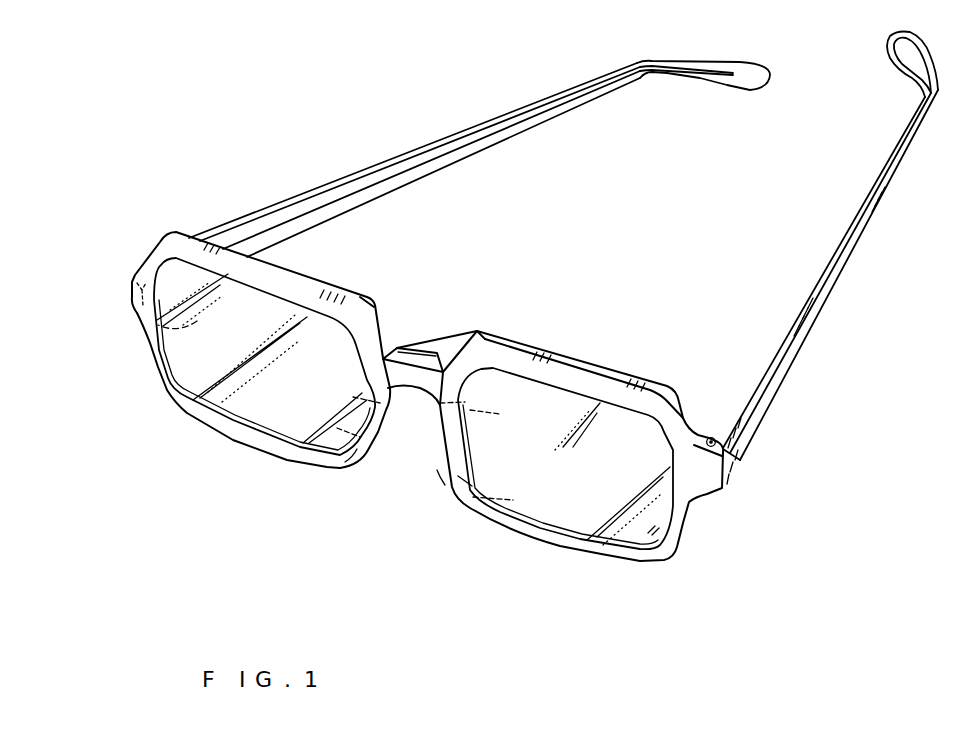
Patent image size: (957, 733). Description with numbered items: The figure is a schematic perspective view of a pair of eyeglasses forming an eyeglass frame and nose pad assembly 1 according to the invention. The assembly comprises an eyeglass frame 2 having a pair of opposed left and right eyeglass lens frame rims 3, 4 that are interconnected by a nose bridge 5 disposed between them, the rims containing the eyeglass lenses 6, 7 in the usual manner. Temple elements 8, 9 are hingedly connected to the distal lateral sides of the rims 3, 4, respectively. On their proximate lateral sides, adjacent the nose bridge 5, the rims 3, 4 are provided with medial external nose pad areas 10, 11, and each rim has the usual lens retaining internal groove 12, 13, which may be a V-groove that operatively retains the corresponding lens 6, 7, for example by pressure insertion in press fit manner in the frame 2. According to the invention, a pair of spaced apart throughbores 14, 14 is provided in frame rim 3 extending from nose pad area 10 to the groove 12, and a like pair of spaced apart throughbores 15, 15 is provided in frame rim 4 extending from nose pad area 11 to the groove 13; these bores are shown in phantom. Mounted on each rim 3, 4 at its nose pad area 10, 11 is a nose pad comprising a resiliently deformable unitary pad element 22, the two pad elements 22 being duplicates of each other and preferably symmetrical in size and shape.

The eyeglass frame and nose pad assembly 1 is at (512, 319).
The eyeglass frame 2 is at (208, 432).
The left eyeglass lens frame rim 3 is at (273, 460).
The right eyeglass lens frame rim 4 is at (560, 548).
The nose bridge 5 is at (412, 350).
The eyeglass lens 6 is at (187, 360).
The eyeglass lens 7 is at (653, 517).
The temple element 8 is at (525, 130).
The temple element 9 is at (870, 213).
The medial external nose pad area 10 is at (362, 428).
The medial external nose pad area 11 is at (465, 482).
The lens retaining internal groove 12 is at (197, 321).
The lens retaining internal groove 13 is at (465, 402).
The throughbore 14 is at (366, 400).
The throughbore 15 is at (483, 408).
The resiliently deformable unitary pad element 22 is at (353, 453).